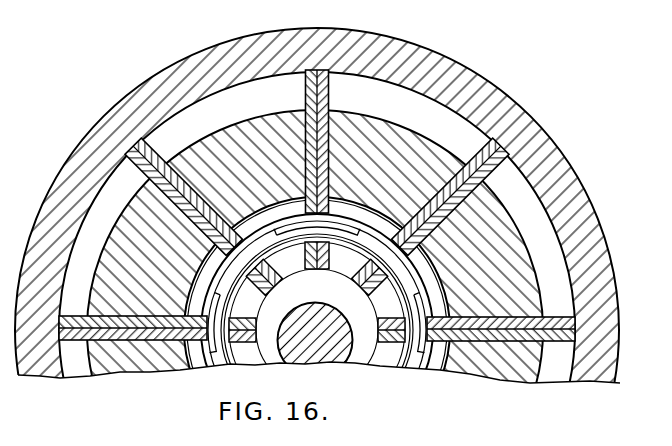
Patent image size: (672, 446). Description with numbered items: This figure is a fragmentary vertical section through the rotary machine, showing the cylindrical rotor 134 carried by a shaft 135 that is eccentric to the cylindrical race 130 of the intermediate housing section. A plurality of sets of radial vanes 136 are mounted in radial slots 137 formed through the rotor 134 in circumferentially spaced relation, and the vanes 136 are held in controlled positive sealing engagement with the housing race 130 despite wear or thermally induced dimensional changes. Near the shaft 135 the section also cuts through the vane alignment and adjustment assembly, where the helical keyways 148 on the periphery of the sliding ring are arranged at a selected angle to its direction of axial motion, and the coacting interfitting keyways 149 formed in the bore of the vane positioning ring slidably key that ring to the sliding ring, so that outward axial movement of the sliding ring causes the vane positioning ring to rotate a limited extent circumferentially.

The cylindrical race 130 is at (442, 100).
The cylindrical rotor 134 is at (512, 258).
The shaft 135 is at (332, 347).
The radial vanes 136 is at (134, 146).
The radial slots 137 is at (302, 133).
The helical keyways 148 is at (286, 229).
The interfitting keyways 149 is at (348, 226).